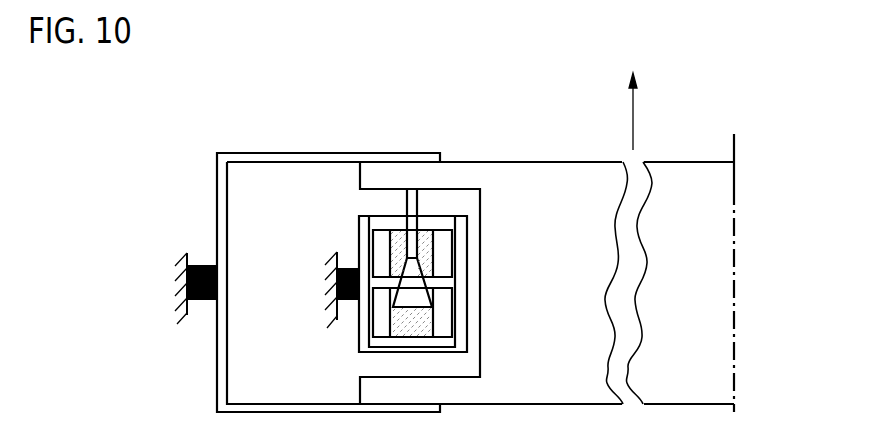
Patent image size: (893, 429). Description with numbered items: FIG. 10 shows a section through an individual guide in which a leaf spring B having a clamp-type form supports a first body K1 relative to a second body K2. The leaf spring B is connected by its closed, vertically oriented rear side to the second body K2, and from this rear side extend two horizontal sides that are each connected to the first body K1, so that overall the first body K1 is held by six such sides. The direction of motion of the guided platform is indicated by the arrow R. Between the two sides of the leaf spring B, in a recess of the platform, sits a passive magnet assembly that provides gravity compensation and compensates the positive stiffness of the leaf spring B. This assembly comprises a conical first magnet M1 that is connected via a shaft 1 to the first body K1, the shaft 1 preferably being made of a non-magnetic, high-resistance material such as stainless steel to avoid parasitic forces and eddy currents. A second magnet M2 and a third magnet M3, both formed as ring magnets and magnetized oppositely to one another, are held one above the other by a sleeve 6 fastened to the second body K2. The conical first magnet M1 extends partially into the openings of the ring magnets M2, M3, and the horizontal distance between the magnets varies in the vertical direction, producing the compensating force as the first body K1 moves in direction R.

The leaf spring B is at (305, 153).
The first body K1 is at (542, 177).
The direction of movement R is at (645, 111).
The shaft 1 is at (412, 201).
The first magnet M1 is at (415, 283).
The sleeve 6 is at (363, 312).
The third magnet M3 is at (383, 253).
The second magnet M2 is at (382, 325).
The second body K2 is at (184, 283).